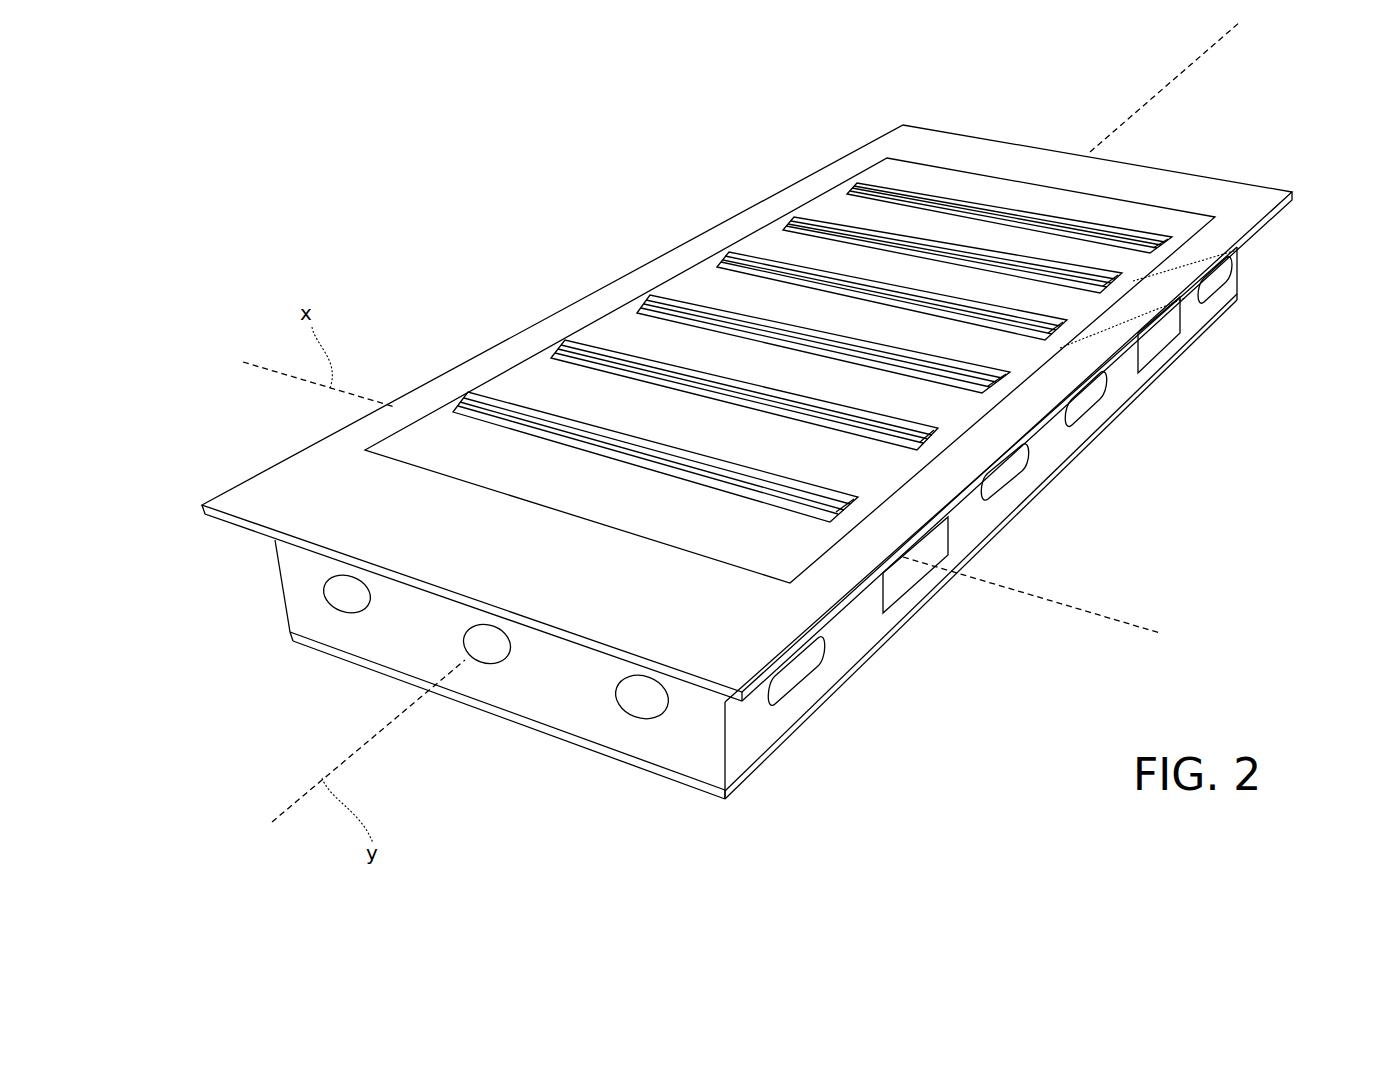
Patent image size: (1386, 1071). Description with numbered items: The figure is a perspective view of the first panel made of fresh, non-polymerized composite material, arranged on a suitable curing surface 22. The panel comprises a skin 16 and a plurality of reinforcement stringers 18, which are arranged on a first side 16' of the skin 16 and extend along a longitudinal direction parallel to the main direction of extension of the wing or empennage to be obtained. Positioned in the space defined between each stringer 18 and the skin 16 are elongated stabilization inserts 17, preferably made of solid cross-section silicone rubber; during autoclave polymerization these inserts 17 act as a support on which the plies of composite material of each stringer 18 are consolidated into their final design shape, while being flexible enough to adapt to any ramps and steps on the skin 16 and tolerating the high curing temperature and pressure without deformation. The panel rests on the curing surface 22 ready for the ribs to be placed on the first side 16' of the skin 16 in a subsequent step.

The skin 16 is at (732, 413).
The first side of the skin 16' is at (681, 370).
The elongated stabilization inserts 17 is at (1150, 357).
The reinforcement stringers 18 is at (820, 213).
The curing surface 22 is at (873, 660).